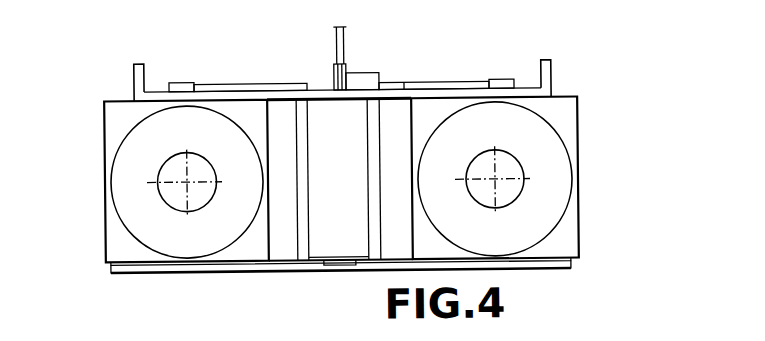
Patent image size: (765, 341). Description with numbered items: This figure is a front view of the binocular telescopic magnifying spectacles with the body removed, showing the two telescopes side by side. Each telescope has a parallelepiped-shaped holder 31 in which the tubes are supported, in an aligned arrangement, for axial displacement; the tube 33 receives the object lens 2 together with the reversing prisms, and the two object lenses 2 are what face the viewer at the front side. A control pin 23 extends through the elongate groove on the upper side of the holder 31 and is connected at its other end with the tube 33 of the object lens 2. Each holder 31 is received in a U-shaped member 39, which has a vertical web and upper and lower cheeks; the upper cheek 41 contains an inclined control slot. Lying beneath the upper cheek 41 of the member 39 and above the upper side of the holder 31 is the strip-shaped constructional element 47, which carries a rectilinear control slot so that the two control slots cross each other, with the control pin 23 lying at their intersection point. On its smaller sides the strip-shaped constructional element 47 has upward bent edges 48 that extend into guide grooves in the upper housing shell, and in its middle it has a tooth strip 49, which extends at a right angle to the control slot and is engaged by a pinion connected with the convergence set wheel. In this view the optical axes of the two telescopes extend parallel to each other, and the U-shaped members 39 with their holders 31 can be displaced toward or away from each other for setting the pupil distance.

The object lens 2 is at (168, 191).
The control pin 23 is at (182, 78).
The holder 31 is at (108, 124).
The tube 33 is at (148, 230).
The U-shaped member 39 is at (362, 141).
The upper cheek 41 is at (245, 84).
The strip-shaped constructional element 47 is at (323, 93).
The upward bent edges 48 is at (135, 78).
The tooth strip 49 is at (362, 83).